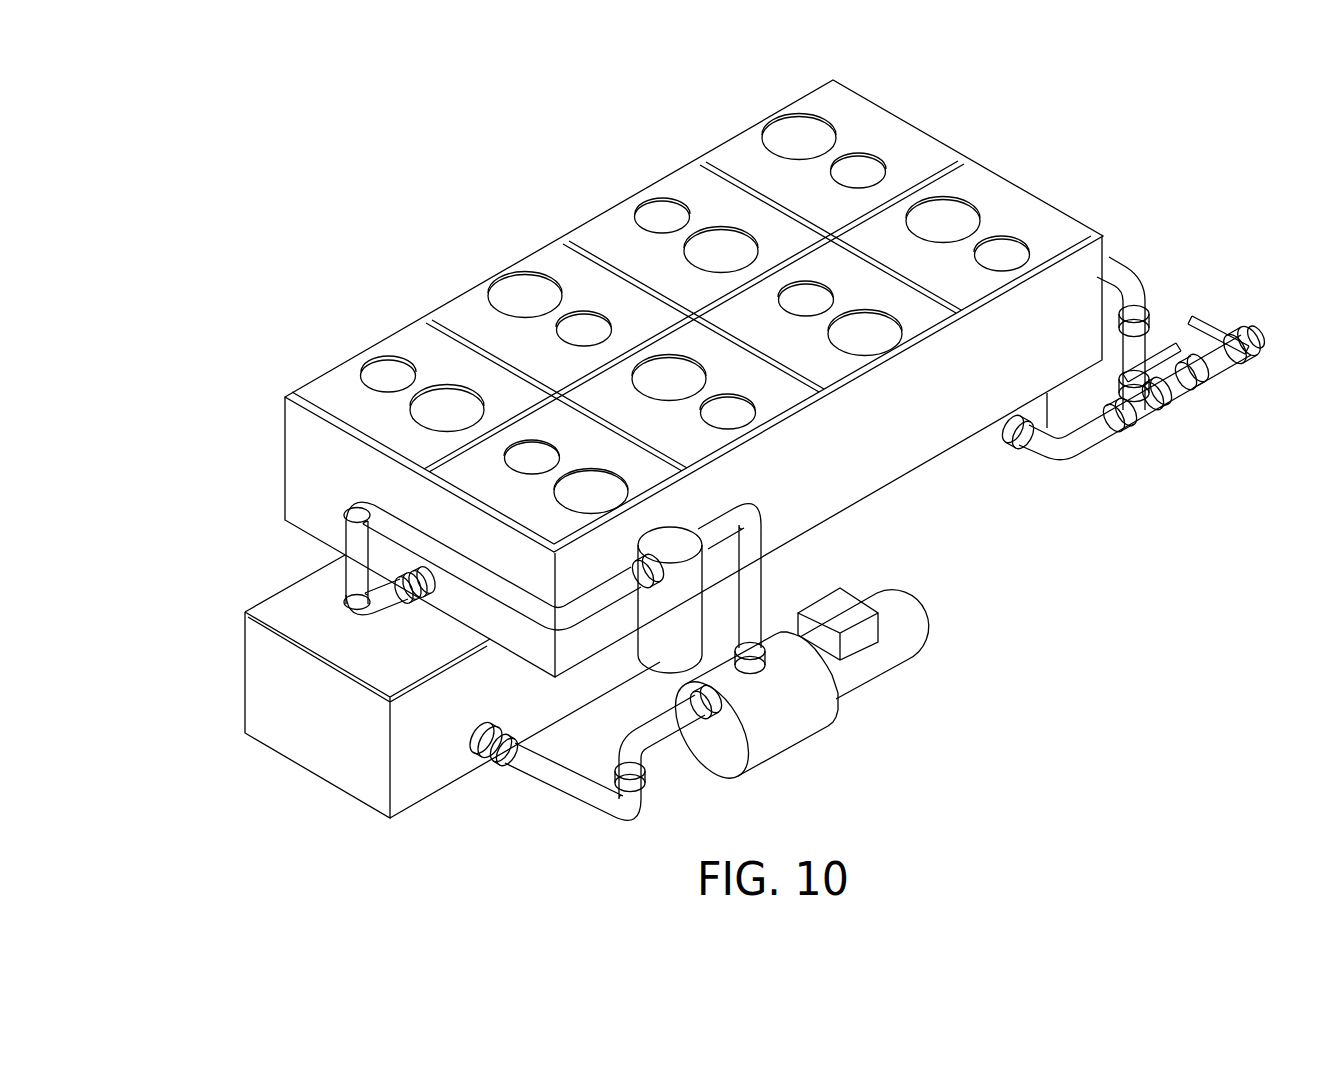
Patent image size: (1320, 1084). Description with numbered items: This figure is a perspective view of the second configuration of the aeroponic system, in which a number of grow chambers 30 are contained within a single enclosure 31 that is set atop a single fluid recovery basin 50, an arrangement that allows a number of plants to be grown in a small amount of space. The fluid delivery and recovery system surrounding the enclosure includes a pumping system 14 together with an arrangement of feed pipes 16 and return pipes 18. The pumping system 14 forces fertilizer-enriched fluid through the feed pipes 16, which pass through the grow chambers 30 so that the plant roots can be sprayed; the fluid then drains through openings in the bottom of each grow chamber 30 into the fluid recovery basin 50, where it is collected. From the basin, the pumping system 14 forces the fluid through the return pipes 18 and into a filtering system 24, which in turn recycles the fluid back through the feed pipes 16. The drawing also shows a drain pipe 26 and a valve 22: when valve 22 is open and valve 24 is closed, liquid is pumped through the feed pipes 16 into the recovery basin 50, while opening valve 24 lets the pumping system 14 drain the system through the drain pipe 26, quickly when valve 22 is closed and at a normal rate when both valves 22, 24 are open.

The pumping system 14 is at (783, 733).
The feed pipes 16 is at (340, 572).
The return pipes 18 is at (553, 767).
The valve 22 is at (1167, 367).
The filtering system 24 is at (687, 605).
The drain pipe 26 is at (1215, 322).
The grow chambers 30 is at (320, 388).
The enclosure 31 is at (300, 463).
The fluid recovery basin 50 is at (258, 670).